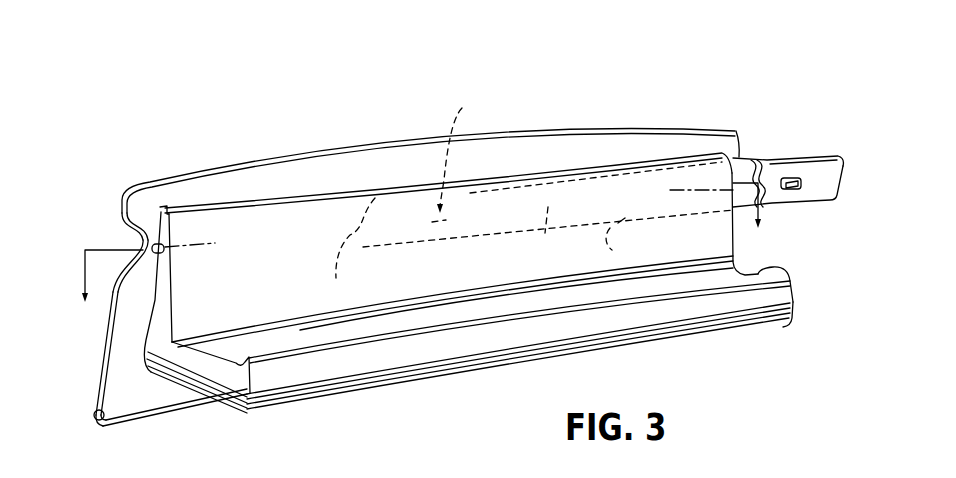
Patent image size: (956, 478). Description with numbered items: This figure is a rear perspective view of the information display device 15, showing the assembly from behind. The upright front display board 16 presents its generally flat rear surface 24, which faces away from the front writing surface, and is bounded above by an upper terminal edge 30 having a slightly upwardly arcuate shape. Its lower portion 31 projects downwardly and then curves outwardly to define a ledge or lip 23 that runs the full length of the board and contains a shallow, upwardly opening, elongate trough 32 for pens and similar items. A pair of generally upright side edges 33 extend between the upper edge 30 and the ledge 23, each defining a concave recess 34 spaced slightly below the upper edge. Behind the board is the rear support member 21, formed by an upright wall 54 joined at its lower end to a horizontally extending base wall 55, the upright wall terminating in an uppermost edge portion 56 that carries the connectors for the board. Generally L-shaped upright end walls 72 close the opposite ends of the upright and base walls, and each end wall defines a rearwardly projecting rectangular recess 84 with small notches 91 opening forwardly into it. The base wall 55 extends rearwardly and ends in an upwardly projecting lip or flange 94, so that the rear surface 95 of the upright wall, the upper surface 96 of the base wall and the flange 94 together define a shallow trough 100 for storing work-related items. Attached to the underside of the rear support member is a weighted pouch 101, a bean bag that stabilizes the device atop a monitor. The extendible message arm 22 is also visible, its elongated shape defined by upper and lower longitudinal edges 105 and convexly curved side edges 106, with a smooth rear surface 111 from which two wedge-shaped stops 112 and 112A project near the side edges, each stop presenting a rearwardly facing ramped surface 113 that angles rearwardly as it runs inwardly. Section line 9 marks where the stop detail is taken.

The information display device 15 is at (280, 147).
The front display board 16 is at (110, 200).
The rear support member 21 is at (547, 160).
The message arm 22 is at (778, 143).
The ledge or lip 23 is at (94, 409).
The rear surface 24 is at (378, 170).
The upper terminal edge 30 is at (313, 150).
The lower portion 31 is at (147, 428).
The trough 32 is at (103, 406).
The side edges 33 is at (115, 295).
The concave recess 34 is at (143, 243).
The upright wall 54 is at (212, 234).
The base wall 55 is at (213, 378).
The uppermost edge portion 56 is at (260, 198).
The end walls 72 is at (153, 318).
The recess 84 is at (149, 220).
The notches 91 is at (163, 251).
The lip or flange 94 is at (789, 276).
The rear surface 95 is at (296, 270).
The upper surface 96 is at (412, 323).
The trough 100 is at (232, 338).
The weighted pouch 101 is at (624, 343).
The longitudinal edges 105 is at (798, 157).
The side edges 106 is at (842, 118).
The rear surface 111 is at (548, 237).
The stop 112 is at (803, 194).
The stop 112A is at (480, 150).
The ramped surface 113 is at (455, 235).
The section line 9- 9 is at (431, 262).